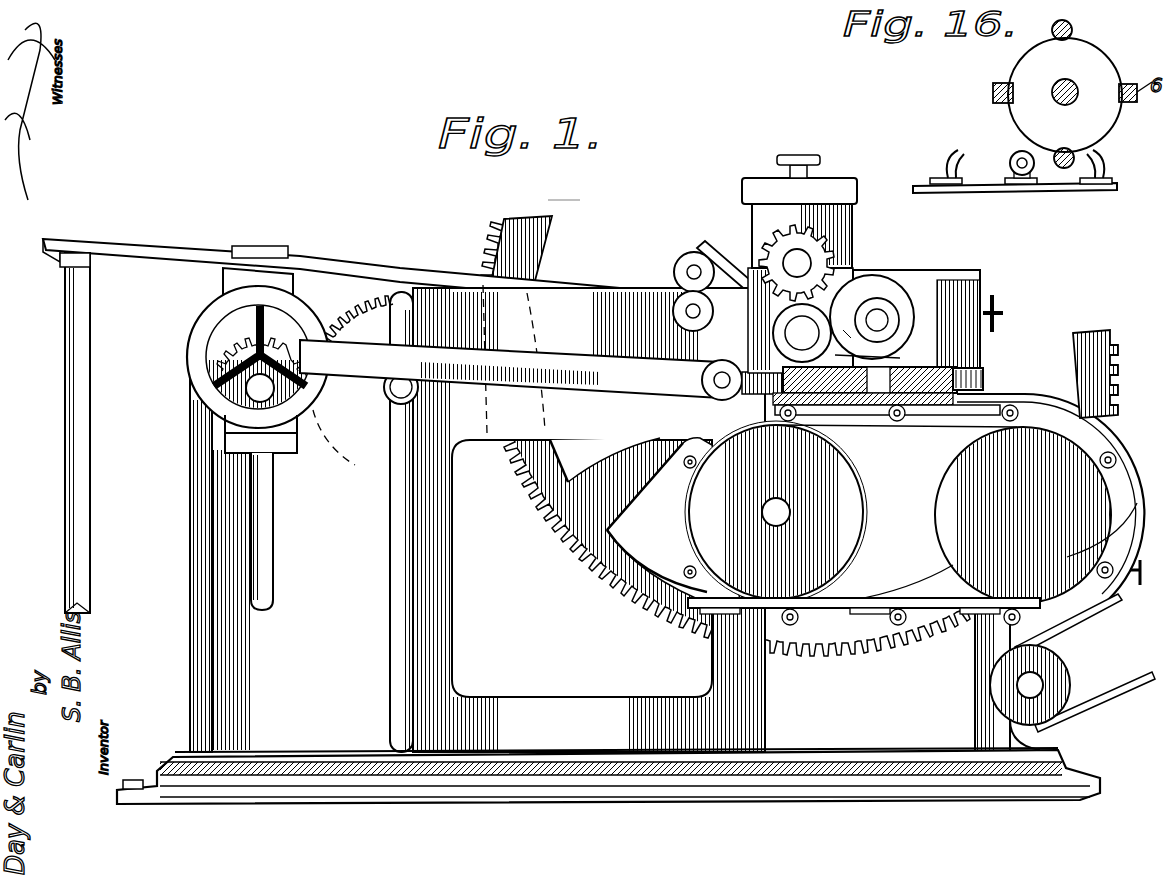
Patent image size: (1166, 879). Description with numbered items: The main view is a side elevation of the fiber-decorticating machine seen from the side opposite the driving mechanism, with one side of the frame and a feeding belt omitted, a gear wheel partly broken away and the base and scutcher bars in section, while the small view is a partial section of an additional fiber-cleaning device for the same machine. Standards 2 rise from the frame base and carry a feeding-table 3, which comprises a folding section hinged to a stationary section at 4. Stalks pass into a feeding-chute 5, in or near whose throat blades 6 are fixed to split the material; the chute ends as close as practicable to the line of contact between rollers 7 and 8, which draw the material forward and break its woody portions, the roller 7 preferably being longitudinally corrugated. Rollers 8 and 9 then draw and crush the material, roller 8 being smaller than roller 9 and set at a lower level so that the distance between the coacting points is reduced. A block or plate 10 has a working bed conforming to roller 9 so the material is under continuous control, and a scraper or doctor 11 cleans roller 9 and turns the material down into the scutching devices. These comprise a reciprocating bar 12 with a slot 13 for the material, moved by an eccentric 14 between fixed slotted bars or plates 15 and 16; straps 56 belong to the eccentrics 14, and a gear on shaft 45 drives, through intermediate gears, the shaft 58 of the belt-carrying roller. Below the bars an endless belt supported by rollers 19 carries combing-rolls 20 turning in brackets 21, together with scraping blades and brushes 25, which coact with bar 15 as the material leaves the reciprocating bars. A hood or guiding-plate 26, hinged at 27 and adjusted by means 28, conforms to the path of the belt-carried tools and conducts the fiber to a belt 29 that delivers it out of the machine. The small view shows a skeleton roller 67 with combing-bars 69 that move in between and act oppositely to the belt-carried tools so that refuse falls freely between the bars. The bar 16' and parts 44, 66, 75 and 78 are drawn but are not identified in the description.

In FIG. 1, the standards 2 is at (550, 502).
In FIG. 1, the feeding-table 3 is at (200, 256).
In FIG. 1, the hinge of feeding-table 4 is at (407, 272).
In FIG. 1, the feeding-chute 5 is at (686, 271).
In FIG. 1, the blades 6 is at (741, 268).
In FIG. 1, the roller 7 is at (833, 262).
In FIG. 1, the roller 8 is at (790, 335).
In FIG. 1, the roller 9 is at (872, 317).
In FIG. 1, the block or plate 10 is at (877, 320).
In FIG. 1, the scraper or doctor 11 is at (889, 324).
In FIG. 1, the reciprocating bar 12 is at (973, 364).
In FIG. 1, the slot 13 is at (916, 321).
In FIG. 1, the eccentric 14 is at (290, 325).
In FIG. 1, the fixed bar or plate 15 is at (867, 346).
In FIG. 1, the fixed bar or plate 16 is at (1000, 327).
In FIG. 1, the adjusting screw 16' is at (885, 288).
In FIG. 1, the rollers 19 is at (776, 487).
In FIG. 1, the combing-rolls 20 is at (898, 602).
In FIG. 16, the combing-rolls 20 is at (1009, 157).
In FIG. 1, the brackets 21 is at (1038, 396).
In FIG. 1, the brushes 25 is at (673, 522).
In FIG. 16, the brushes 25 is at (1026, 164).
In FIG. 1, the hood or guiding-plate 26 is at (1117, 452).
In FIG. 1, the hinge of hood 27 is at (992, 428).
In FIG. 1, the adjusting means 28 is at (1117, 560).
In FIG. 1, the delivery belt 29 is at (1072, 663).
In FIG. 1, the stop 44 is at (564, 189).
In FIG. 1, the shaft 45 is at (541, 368).
In FIG. 1, the straps of eccentrics 56 is at (985, 384).
In FIG. 1, the shaft of belt-carrying roller 58 is at (776, 512).
In FIG. 1, the wheel housing 66 is at (238, 439).
In FIG. 16, the skeleton roller 67 is at (1065, 95).
In FIG. 16, the combing-bars 69 is at (1070, 30).
In FIG. 1, the plate 75 is at (896, 413).
In FIG. 1, the base plate 78 is at (884, 432).
In FIG. 16, the base plate 78 is at (1015, 197).